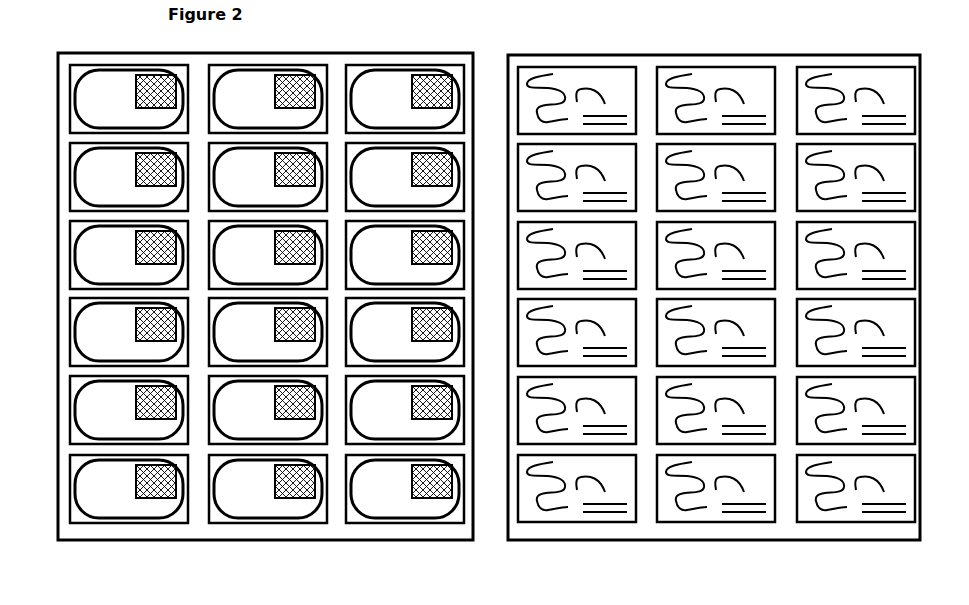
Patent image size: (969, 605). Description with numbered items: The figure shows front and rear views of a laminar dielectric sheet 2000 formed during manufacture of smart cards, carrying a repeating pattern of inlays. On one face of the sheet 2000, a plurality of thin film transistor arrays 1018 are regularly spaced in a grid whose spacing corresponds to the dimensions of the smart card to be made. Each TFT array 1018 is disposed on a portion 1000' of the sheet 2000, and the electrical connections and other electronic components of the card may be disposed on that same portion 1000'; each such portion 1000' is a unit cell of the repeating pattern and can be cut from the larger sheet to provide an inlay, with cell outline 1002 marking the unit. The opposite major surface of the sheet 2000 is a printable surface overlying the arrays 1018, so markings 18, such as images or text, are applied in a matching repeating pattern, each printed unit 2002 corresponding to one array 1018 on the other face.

The laminar dielectric sheet 2000 is at (105, 53).
The portion of the laminar dielectric sheet 1000' is at (383, 70).
The label base 1002 is at (386, 66).
The thin film transistor array 1018 is at (137, 92).
The printed indicia 18 is at (577, 67).
The printed label 2002 is at (845, 70).